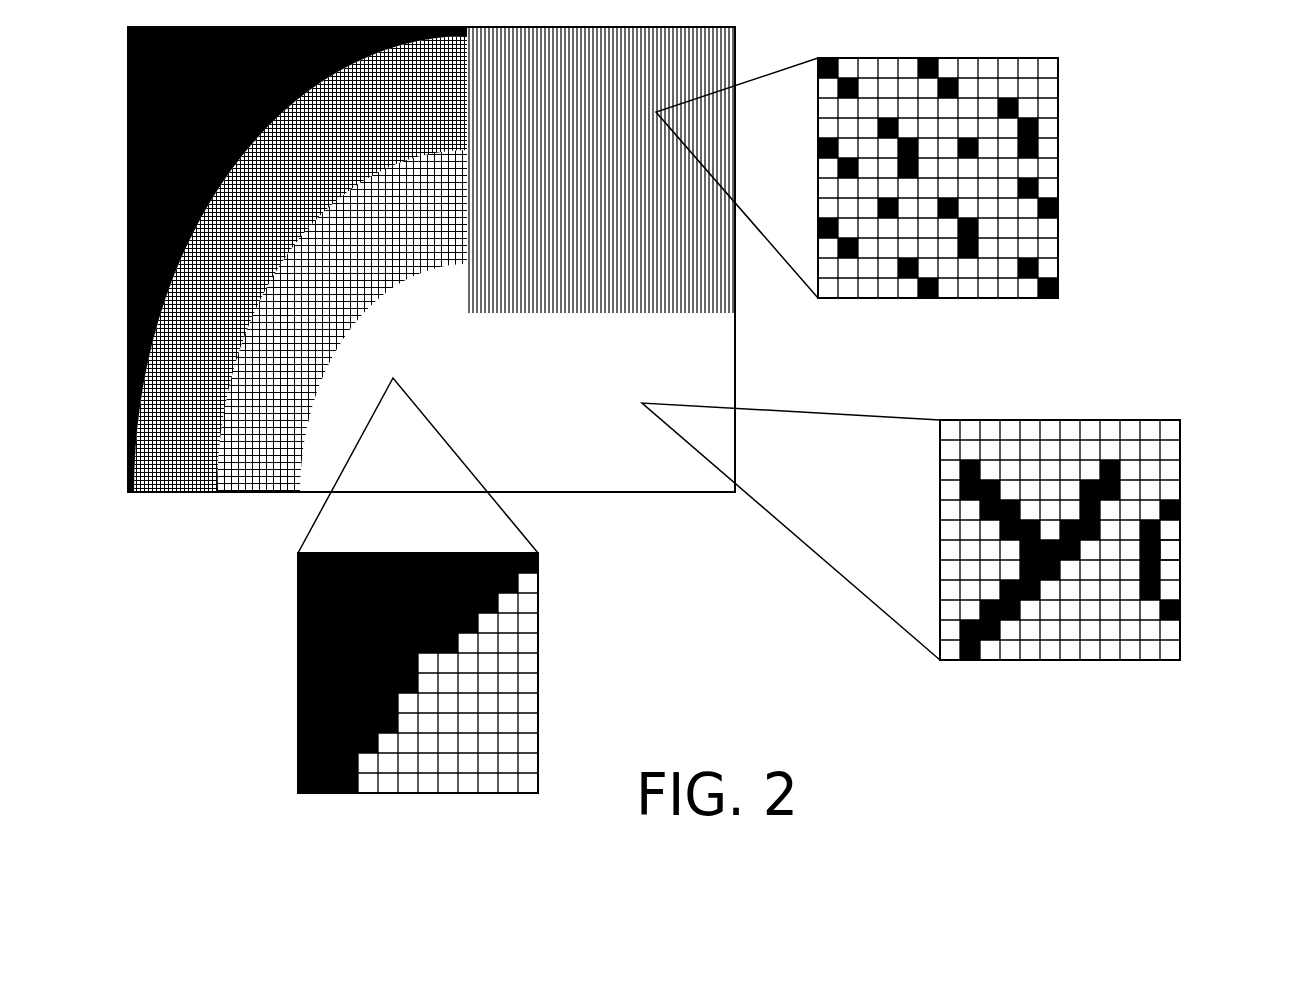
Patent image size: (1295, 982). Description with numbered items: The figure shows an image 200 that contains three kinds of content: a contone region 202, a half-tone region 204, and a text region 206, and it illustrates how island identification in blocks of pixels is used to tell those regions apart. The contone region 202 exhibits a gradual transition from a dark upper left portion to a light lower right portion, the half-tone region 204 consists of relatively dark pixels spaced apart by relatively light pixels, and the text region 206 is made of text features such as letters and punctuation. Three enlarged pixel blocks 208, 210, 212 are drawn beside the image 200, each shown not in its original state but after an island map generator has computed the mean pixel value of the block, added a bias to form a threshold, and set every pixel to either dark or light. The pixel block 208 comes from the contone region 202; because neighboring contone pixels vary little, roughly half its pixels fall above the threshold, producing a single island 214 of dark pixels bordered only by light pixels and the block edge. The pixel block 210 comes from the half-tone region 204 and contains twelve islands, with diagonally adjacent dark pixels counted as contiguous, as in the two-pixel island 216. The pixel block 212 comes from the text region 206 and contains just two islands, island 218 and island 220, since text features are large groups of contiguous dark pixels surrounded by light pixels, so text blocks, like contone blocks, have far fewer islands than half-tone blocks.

The image 200 is at (493, 255).
The contone region 202 is at (451, 487).
The half-tone region 204 is at (673, 191).
The text region 206 is at (611, 439).
The pixel block 208 is at (343, 585).
The pixel block 210 is at (936, 178).
The pixel block 212 is at (941, 517).
The island 214 is at (343, 707).
The island 216 is at (1109, 186).
The island 218 is at (1046, 656).
The island 220 is at (1209, 558).